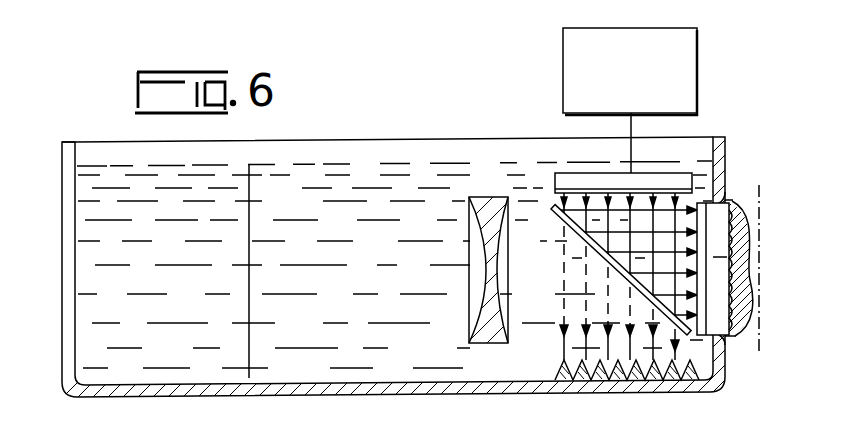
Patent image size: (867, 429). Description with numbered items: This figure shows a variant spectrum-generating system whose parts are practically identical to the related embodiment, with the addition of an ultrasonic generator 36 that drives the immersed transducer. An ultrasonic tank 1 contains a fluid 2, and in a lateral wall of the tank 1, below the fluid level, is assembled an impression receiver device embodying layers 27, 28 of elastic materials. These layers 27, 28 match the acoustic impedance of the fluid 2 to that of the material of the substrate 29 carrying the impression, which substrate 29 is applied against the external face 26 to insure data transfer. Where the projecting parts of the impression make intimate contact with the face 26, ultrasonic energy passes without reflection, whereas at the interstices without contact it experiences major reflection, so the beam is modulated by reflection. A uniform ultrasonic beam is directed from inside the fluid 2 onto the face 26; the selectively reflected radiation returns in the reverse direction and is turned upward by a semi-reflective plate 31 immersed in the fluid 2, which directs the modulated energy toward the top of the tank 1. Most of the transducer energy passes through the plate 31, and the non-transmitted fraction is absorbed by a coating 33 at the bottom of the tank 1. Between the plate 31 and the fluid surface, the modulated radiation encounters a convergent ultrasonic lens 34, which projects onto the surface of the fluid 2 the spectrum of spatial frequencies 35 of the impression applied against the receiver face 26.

The ultrasonic tank 1 is at (725, 146).
The fluid 2 is at (320, 163).
The external face 26 is at (734, 200).
The layer of elastic material 27 is at (743, 240).
The layer of elastic material 28 is at (697, 222).
The substrate 29 is at (737, 338).
The semi-reflective plate 31 is at (585, 240).
The coating 33 is at (558, 375).
The convergent ultrasonic lens 34 is at (477, 310).
The spectrum of spatial frequencies 35 is at (250, 222).
The ultrasonic generator 36 is at (688, 93).